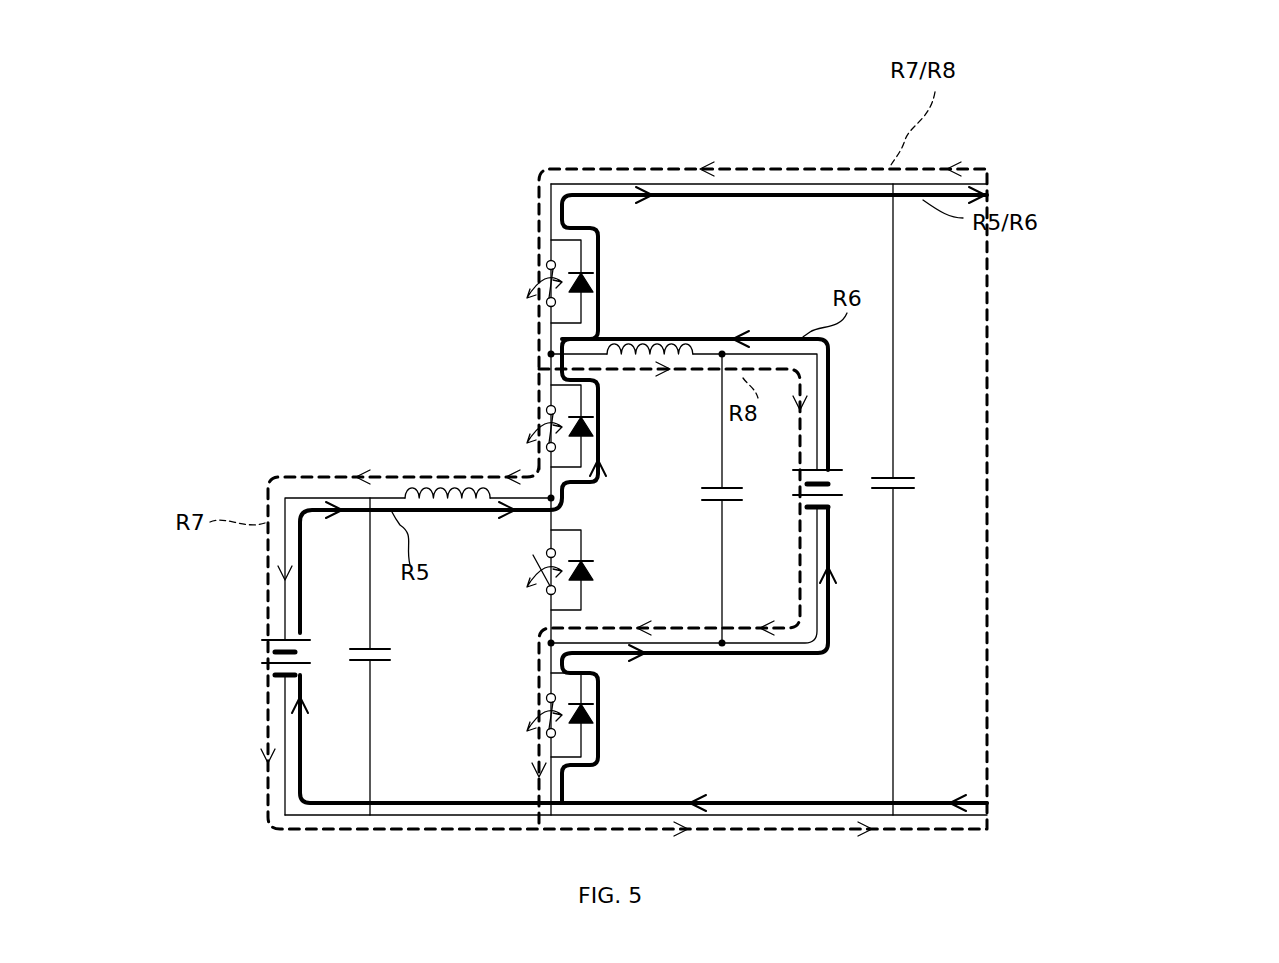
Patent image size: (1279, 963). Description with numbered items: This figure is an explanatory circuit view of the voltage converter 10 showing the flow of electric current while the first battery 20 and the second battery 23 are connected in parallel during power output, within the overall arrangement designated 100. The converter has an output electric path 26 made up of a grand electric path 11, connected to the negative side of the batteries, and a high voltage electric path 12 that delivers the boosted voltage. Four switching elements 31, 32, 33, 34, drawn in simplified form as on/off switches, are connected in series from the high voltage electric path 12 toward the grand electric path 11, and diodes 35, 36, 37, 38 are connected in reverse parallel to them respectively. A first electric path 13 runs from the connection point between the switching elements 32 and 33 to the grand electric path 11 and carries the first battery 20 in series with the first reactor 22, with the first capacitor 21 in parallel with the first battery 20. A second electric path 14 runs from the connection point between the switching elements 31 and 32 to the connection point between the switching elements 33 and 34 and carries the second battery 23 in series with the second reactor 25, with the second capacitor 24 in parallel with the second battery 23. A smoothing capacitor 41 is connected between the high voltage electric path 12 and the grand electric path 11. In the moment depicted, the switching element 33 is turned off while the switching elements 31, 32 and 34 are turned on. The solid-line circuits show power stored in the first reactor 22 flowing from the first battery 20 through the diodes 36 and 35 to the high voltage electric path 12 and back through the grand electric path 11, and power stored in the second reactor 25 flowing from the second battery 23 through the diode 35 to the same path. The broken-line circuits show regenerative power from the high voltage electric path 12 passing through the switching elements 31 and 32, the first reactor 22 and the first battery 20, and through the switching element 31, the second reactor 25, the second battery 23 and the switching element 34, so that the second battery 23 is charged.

The voltage converter 10 is at (306, 214).
The grand electric path 11 is at (968, 817).
The high voltage electric path 12 is at (810, 185).
The first electric path 13 is at (335, 495).
The second electric path 14 is at (757, 354).
The first battery 20 is at (267, 638).
The first capacitor 21 is at (380, 648).
The first reactor 22 is at (452, 490).
The second battery 23 is at (833, 468).
The second capacitor 24 is at (713, 487).
The second reactor 25 is at (658, 350).
The output electric path 26 is at (1002, 152).
The switching element 31 is at (540, 283).
The switching element 32 is at (540, 422).
The switching element 33 is at (533, 570).
The switching element 34 is at (543, 705).
The diode 35 is at (590, 283).
The diode 36 is at (590, 427).
The diode 37 is at (592, 561).
The diode 38 is at (590, 710).
The smoothing capacitor 41 is at (907, 477).
The power supply system 100 is at (1180, 124).